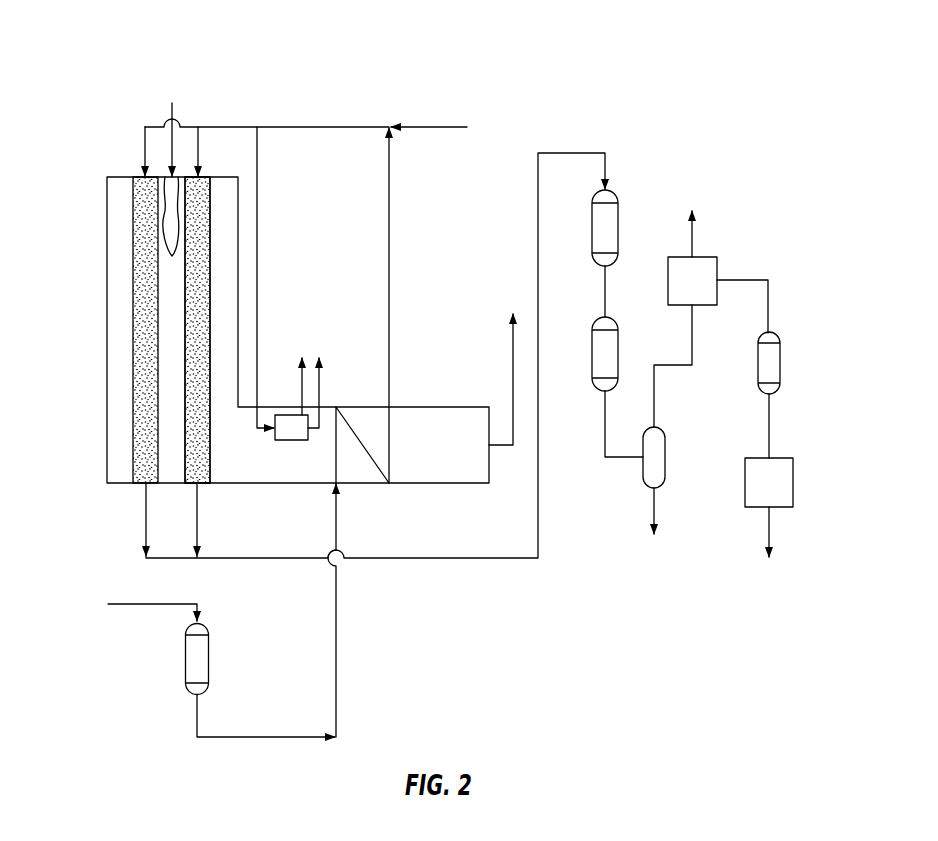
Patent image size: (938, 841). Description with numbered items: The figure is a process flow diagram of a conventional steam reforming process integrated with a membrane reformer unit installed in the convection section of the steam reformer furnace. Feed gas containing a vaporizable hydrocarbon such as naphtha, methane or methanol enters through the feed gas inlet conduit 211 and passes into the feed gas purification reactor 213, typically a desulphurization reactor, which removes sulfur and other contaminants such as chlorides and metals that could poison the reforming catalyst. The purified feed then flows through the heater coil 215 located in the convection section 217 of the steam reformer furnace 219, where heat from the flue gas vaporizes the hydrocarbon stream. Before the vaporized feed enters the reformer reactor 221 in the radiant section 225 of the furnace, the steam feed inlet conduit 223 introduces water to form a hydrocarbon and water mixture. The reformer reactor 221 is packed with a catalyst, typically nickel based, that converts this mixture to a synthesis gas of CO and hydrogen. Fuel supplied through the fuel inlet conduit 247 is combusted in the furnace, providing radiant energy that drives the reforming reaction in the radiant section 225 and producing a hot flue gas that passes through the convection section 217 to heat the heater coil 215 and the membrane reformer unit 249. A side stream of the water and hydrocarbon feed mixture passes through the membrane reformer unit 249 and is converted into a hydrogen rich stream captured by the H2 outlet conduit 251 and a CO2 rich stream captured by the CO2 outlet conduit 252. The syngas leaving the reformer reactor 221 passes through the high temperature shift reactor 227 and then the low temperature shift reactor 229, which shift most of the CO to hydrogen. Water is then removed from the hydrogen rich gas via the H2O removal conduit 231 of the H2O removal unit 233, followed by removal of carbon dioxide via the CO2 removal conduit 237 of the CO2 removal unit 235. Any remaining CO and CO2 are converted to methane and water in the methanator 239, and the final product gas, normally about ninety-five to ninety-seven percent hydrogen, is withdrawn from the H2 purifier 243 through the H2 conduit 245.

The feed gas inlet conduit 211 is at (153, 604).
The feed gas purification reactor 213 is at (185, 660).
The heater coil 215 is at (389, 445).
The convection section 217 is at (490, 490).
The steam reformer furnace 219 is at (257, 302).
The reformer reactor 221 is at (200, 262).
The steam feed inlet conduit 223 is at (467, 127).
The radiant section 225 is at (102, 177).
The high temperature shift reactor 227 is at (618, 212).
The low temperature shift reactor 229 is at (618, 357).
The H2O removal conduit 231 is at (654, 510).
The H2O removal unit 233 is at (665, 457).
The CO2 removal unit 235 is at (717, 270).
The CO2 removal conduit 237 is at (692, 237).
The methanator 239 is at (780, 367).
The H2 purifier 243 is at (785, 458).
The H2 conduit 245 is at (769, 530).
The fuel inlet conduit 247 is at (172, 106).
The membrane reformer unit 249 is at (292, 440).
The H2 outlet conduit 251 is at (300, 380).
The CO2 outlet conduit 252 is at (320, 387).